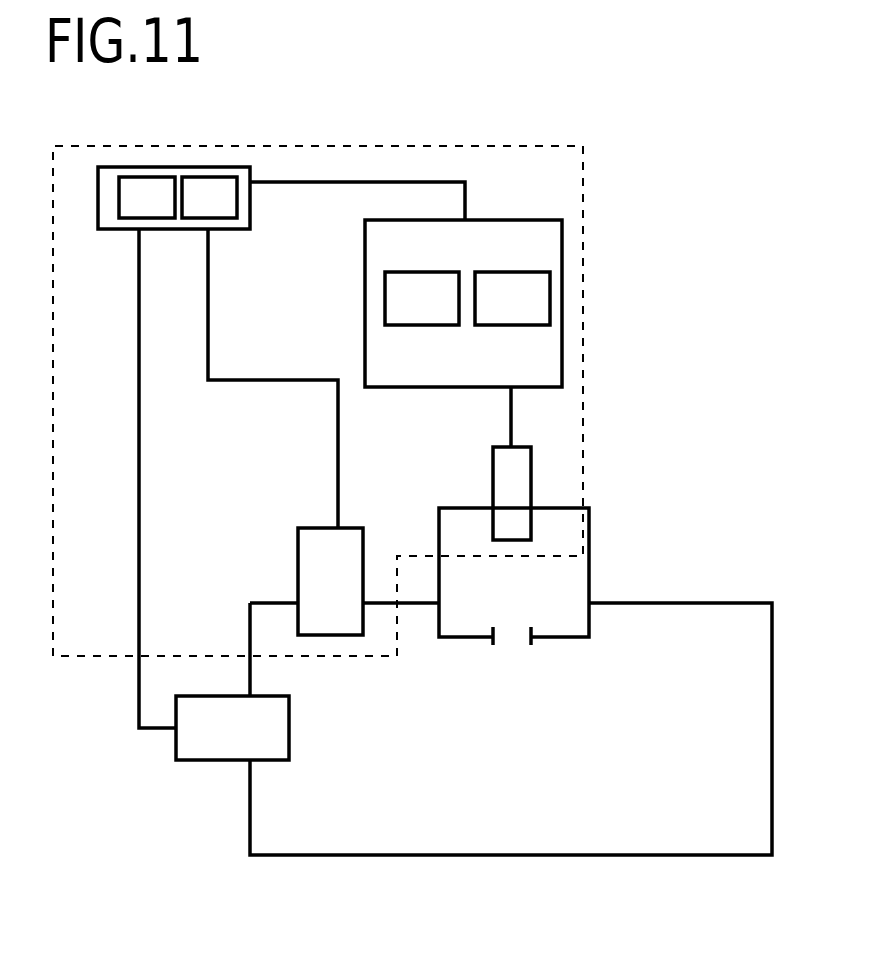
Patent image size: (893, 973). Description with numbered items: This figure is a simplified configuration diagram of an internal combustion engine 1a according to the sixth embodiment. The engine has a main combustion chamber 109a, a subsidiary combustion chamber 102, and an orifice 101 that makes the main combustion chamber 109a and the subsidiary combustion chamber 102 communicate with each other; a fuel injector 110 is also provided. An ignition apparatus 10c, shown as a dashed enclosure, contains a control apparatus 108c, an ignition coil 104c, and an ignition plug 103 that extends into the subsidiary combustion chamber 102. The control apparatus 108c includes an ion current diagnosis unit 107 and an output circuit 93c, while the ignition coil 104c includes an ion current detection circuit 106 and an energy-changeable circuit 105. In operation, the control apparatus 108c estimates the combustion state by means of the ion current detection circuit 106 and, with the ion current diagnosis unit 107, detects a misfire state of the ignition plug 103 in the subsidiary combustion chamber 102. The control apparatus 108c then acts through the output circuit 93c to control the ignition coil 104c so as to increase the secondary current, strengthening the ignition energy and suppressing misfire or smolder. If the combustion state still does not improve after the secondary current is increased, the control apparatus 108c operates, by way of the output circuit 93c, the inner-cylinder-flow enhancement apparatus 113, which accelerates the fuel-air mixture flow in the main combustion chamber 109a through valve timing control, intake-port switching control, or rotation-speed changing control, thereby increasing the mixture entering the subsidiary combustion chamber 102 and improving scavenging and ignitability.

The internal combustion engine 1a is at (412, 464).
The ignition apparatus 10c is at (318, 366).
The control apparatus 108c is at (203, 188).
The ion current diagnosis unit 107 is at (124, 235).
The output circuit 93c is at (257, 213).
The ignition coil 104c is at (480, 291).
The energy-changeable circuit 105 is at (582, 260).
The ion current detection circuit 106 is at (361, 298).
The ignition plug 103 is at (571, 472).
The inner-cylinder-flow enhancement apparatus 113 is at (309, 547).
The subsidiary combustion chamber 102 is at (553, 613).
The orifice 101 is at (525, 673).
The fuel injector 110 is at (232, 766).
The main combustion chamber 109a is at (511, 699).